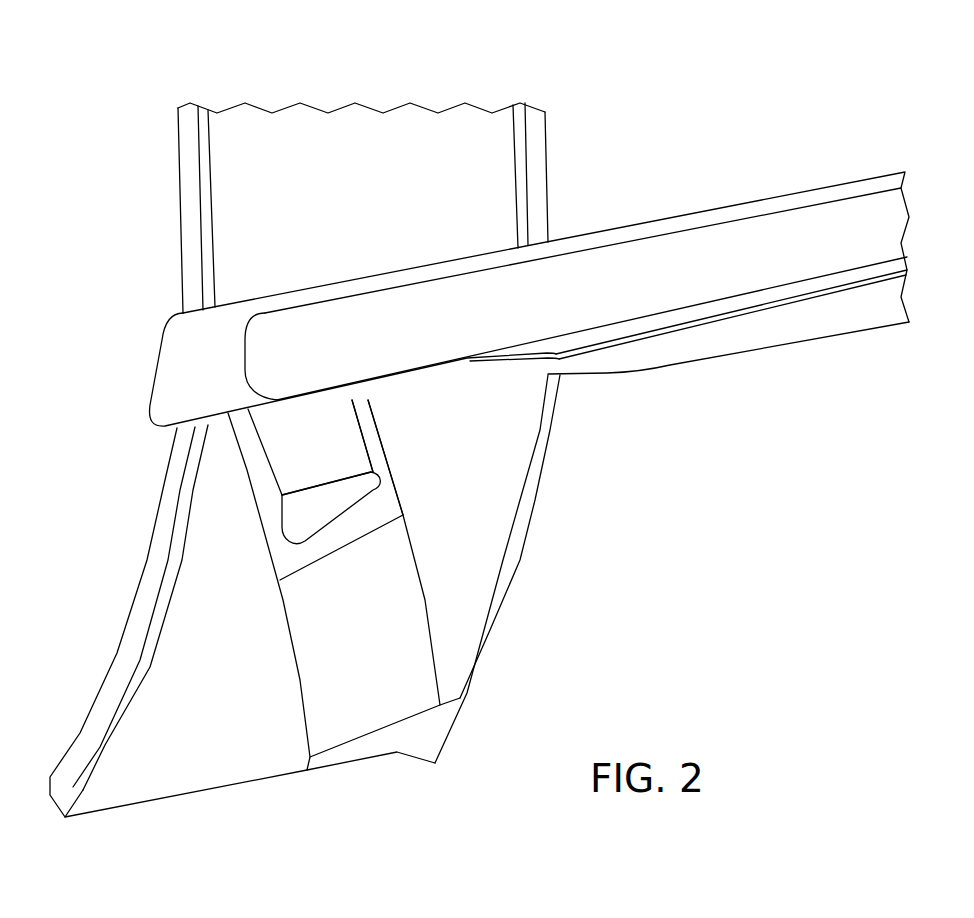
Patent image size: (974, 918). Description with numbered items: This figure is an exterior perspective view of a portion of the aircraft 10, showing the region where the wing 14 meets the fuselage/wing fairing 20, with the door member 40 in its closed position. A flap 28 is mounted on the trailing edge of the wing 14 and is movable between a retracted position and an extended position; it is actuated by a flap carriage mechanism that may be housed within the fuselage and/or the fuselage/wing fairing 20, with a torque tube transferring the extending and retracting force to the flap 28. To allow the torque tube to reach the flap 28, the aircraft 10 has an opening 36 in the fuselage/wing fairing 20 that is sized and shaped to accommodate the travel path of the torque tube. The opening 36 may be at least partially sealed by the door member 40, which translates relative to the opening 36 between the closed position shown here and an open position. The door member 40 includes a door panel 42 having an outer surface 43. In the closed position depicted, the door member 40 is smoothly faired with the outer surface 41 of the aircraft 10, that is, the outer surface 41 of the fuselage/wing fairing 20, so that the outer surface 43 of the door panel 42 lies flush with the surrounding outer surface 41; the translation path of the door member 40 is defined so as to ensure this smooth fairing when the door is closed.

The aircraft 10 is at (606, 106).
The wing 14 is at (824, 186).
The fuselage/wing fairing 20 is at (348, 120).
The flap 28 is at (689, 239).
The opening 36 is at (368, 441).
The door member 40 is at (290, 490).
The outer surface 41 is at (488, 503).
The door panel 42 is at (332, 512).
The outer surface 43 is at (323, 449).